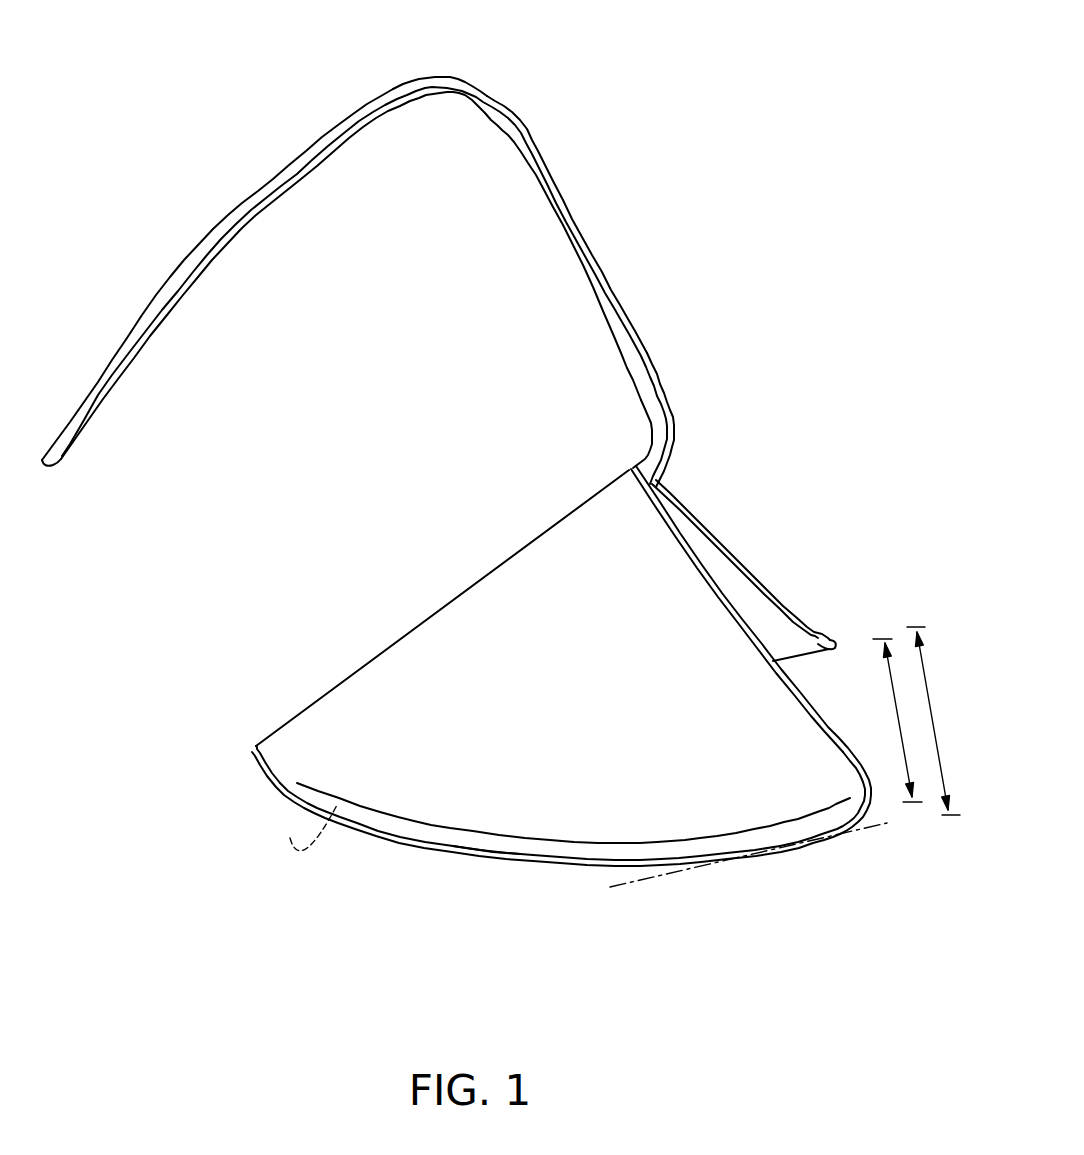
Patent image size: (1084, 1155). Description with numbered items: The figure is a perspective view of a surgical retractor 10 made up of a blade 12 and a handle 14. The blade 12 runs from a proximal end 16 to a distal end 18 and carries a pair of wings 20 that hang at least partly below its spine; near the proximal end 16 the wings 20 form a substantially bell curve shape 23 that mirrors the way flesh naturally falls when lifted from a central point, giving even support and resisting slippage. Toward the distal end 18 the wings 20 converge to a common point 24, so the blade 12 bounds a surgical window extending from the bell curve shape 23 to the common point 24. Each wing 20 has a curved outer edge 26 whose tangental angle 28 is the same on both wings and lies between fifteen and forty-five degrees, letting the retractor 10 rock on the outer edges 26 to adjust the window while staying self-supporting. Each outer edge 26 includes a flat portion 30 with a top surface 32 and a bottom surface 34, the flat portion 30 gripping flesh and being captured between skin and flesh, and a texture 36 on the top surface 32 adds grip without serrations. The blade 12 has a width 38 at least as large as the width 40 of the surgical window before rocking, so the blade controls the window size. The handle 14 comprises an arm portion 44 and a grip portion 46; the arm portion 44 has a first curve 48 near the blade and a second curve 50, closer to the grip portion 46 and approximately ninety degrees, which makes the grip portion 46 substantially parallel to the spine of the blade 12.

The surgical retractor 10 is at (104, 140).
The blade 12 is at (713, 541).
The handle 14 is at (387, 110).
The proximal end of blade 16 is at (632, 466).
The distal end of blade 18 is at (253, 746).
The pair of wings of blade 20 is at (764, 587).
The substantially bell curve shape 23 is at (826, 684).
The common point of pair of wings 24 is at (252, 752).
The outer edges of pair of wings 26 is at (812, 633).
The tangental angle of curve of outer edges 28 is at (620, 866).
The flat portion of outer edges 30 is at (836, 630).
The top surface of flat portion 32 is at (506, 843).
The bottom surface of flat portion 34 is at (304, 828).
The texture of top surface 36 is at (801, 828).
The width of blade 38 is at (933, 721).
The width of surgical window 40 is at (897, 720).
The arm portion of handle 44 is at (606, 268).
The grip portion of handle 46 is at (175, 312).
The first curve of arm portion 48 is at (673, 431).
The second curve of arm portion 50 is at (430, 78).